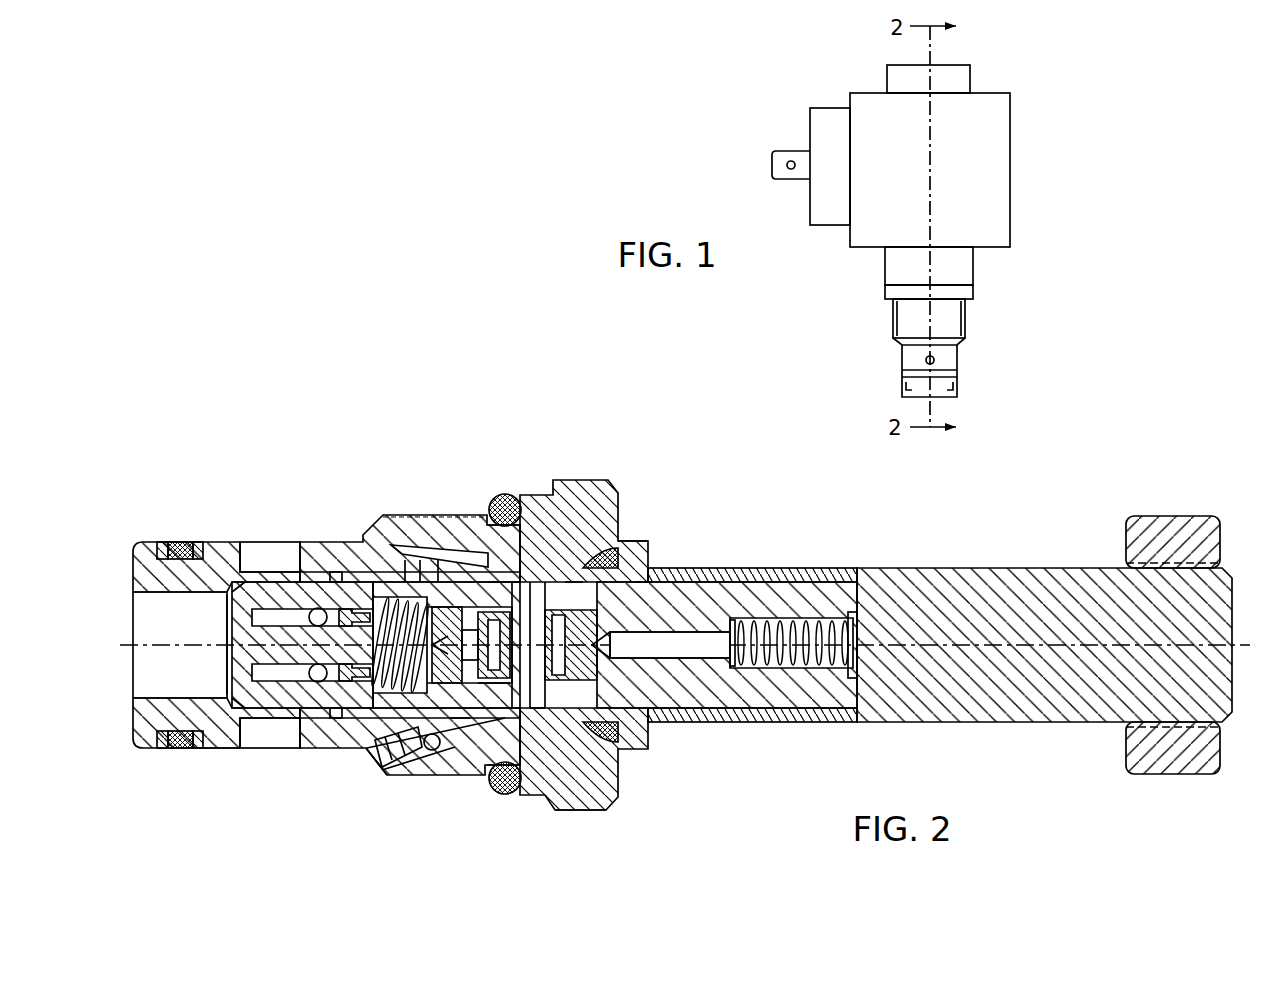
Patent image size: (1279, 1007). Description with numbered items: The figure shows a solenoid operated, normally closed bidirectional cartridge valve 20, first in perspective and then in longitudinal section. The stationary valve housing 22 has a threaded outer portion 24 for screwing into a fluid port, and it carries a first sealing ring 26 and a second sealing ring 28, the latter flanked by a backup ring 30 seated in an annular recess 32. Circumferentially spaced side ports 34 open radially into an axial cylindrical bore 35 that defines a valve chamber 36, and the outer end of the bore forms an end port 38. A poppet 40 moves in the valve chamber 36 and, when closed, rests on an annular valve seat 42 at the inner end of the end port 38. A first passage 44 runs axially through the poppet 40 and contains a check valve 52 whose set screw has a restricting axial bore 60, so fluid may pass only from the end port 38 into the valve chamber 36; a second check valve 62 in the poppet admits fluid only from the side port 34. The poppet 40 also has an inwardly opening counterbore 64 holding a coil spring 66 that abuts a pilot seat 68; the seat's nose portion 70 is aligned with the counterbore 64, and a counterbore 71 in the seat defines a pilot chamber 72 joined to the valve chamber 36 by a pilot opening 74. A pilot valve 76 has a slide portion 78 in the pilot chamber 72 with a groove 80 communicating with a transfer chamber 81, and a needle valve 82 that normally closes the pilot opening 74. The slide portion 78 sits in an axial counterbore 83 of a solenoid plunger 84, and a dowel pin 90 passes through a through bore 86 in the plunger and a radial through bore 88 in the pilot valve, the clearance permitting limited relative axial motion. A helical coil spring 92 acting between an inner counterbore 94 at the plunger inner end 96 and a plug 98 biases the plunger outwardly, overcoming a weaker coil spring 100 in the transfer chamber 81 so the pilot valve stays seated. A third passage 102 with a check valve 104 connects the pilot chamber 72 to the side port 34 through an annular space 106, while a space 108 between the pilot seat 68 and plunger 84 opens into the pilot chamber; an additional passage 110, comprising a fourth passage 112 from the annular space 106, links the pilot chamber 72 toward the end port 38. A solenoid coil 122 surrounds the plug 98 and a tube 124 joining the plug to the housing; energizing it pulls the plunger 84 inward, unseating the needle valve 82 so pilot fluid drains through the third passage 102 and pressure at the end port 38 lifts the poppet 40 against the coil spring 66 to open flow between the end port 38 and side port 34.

In FIG. 1, the bidirectional cartridge valve 20 is at (1050, 128).
In FIG. 1, the valve housing 22 is at (973, 325).
In FIG. 2, the valve housing 22 is at (234, 540).
In FIG. 1, the threaded outer portion 24 is at (912, 320).
In FIG. 2, the threaded outer portion 24 is at (420, 560).
In FIG. 1, the first sealing ring 26 is at (973, 292).
In FIG. 2, the first sealing ring 26 is at (503, 580).
In FIG. 1, the second sealing ring 28 is at (957, 377).
In FIG. 2, the second sealing ring 28 is at (182, 541).
In FIG. 1, the backup ring 30 is at (957, 383).
In FIG. 2, the backup ring 30 is at (160, 541).
In FIG. 1, the annular recess 32 is at (955, 397).
In FIG. 2, the annular recess 32 is at (199, 541).
In FIG. 1, the side ports 34 is at (928, 362).
In FIG. 2, the side ports 34 is at (284, 541).
In FIG. 2, the axial cylindrical bore 35 is at (335, 715).
In FIG. 2, the valve chamber 36 is at (458, 720).
In FIG. 2, the end port 38 is at (160, 612).
In FIG. 2, the poppet 40 is at (258, 578).
In FIG. 2, the annular valve seat 42 is at (218, 748).
In FIG. 2, the first passage 44 is at (230, 672).
In FIG. 2, the check valve 52 is at (303, 720).
In FIG. 2, the axial bore 60 is at (312, 567).
In FIG. 2, the check valve 62 is at (325, 597).
In FIG. 2, the counterbore 64 is at (393, 765).
In FIG. 2, the coil spring 66 is at (380, 533).
In FIG. 2, the pilot seat 68 is at (503, 795).
In FIG. 2, the nose portion 70 is at (447, 702).
In FIG. 2, the counterbore 71 is at (572, 560).
In FIG. 2, the pilot chamber 72 is at (530, 585).
In FIG. 2, the pilot opening 74 is at (445, 575).
In FIG. 2, the pilot valve 76 is at (640, 560).
In FIG. 2, the slide portion 78 is at (575, 603).
In FIG. 2, the groove 80 is at (590, 810).
In FIG. 2, the transfer chamber 81 is at (485, 700).
In FIG. 2, the needle valve 82 is at (457, 585).
In FIG. 2, the axial counterbore 83 is at (640, 582).
In FIG. 2, the solenoid plunger 84 is at (793, 567).
In FIG. 2, the through bore 86 is at (535, 760).
In FIG. 2, the radial through bore 88 is at (613, 650).
In FIG. 2, the dowel pin 90 is at (613, 500).
In FIG. 2, the helical coil spring 92 is at (855, 570).
In FIG. 2, the inner counterbore 94 is at (838, 688).
In FIG. 2, the plunger inner end 96 is at (802, 683).
In FIG. 2, the plug 98 is at (1008, 568).
In FIG. 2, the coil spring 100 is at (507, 525).
In FIG. 2, the third passage 102 is at (370, 763).
In FIG. 2, the check valve 104 is at (405, 760).
In FIG. 2, the annular space 106 is at (524, 778).
In FIG. 2, the space 108 is at (555, 585).
In FIG. 2, the additional passage 110 is at (438, 560).
In FIG. 2, the fourth passage 112 is at (405, 560).
In FIG. 1, the solenoid coil 122 is at (998, 197).
In FIG. 2, the tube 124 is at (828, 627).